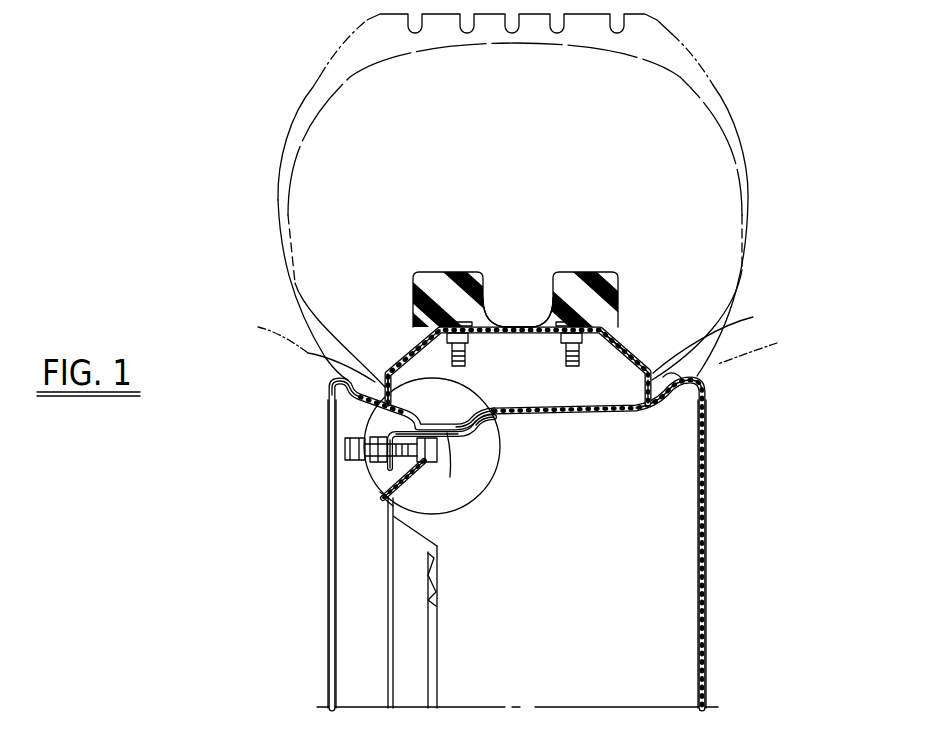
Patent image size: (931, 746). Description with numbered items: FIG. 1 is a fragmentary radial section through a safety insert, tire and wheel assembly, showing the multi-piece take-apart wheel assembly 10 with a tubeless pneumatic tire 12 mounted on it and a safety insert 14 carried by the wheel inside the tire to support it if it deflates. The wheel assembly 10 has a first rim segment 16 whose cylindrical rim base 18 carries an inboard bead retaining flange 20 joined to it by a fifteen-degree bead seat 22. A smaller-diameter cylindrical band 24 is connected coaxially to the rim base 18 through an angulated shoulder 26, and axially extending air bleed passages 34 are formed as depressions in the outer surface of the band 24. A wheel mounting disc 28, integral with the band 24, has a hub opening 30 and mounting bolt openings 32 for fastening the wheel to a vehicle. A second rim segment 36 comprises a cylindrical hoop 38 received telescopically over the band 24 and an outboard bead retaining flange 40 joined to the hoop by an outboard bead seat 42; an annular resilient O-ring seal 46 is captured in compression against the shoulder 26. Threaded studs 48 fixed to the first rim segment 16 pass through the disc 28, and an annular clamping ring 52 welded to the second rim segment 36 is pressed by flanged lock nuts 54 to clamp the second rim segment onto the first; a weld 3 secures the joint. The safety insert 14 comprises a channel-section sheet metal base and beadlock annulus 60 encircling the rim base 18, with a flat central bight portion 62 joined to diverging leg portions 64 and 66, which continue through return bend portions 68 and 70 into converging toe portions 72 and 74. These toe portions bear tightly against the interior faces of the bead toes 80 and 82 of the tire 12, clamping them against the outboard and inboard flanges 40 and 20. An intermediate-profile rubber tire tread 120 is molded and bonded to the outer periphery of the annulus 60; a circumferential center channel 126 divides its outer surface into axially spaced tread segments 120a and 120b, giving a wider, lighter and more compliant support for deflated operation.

The weld 3 is at (381, 492).
The wheel assembly 10 is at (713, 480).
The tubeless pneumatic tire 12 is at (733, 114).
The safety insert 14 is at (645, 318).
The first rim segment 16 is at (709, 587).
The rim base 18 is at (588, 413).
The inboard bead retaining flange 20 is at (707, 396).
The bead seat 22 is at (646, 411).
The cylindrical band 24 is at (500, 472).
The angulated shoulder 26 is at (498, 424).
The wheel mounting disc 28 is at (441, 604).
The hub opening 30 is at (437, 648).
The mounting bolt openings 32 is at (424, 580).
The air bleed passages 34 is at (444, 463).
The second rim segment 36 is at (325, 594).
The cylindrical hoop 38 is at (460, 416).
The outboard bead retaining flange 40 is at (327, 390).
The outboard bead seat 42 is at (340, 403).
The O-ring seal 46 is at (486, 410).
The threaded studs 48 is at (345, 449).
The clamping ring 52 is at (388, 503).
The flanged lock nuts 54 is at (380, 468).
The base and beadlock annulus 60 is at (643, 352).
The bight portion 62 is at (512, 326).
The leg portion 64 is at (408, 362).
The leg portion 66 is at (623, 330).
The return bend portion 68 is at (383, 378).
The return bend portion 70 is at (716, 339).
The toe portion 72 is at (393, 379).
The toe portion 74 is at (646, 388).
The bead toe 80 is at (266, 334).
The bead toe 82 is at (757, 349).
The tire tread 120 is at (480, 273).
The tread segment 120a is at (432, 271).
The tread segment 120b is at (590, 271).
The circumferential center channel 126 is at (530, 305).